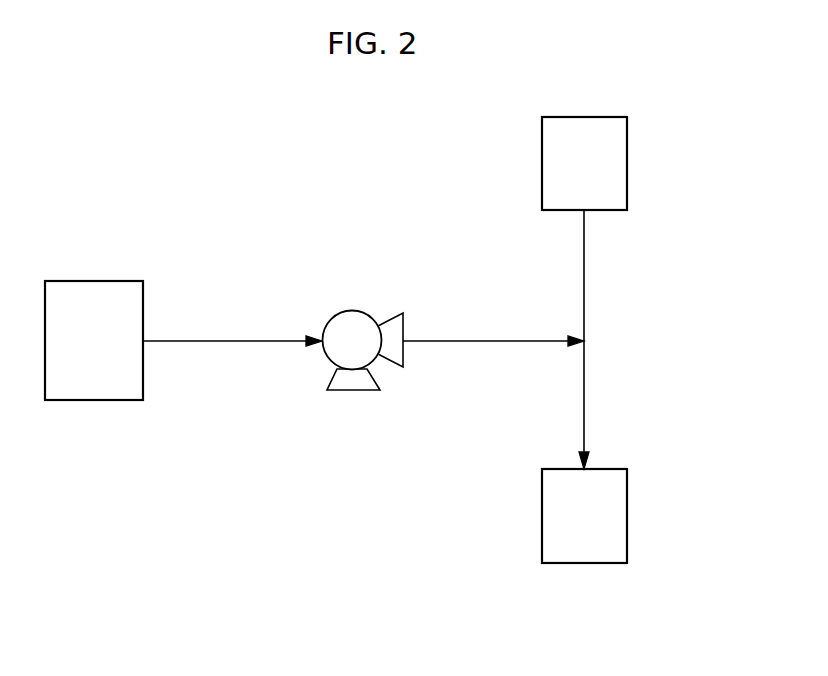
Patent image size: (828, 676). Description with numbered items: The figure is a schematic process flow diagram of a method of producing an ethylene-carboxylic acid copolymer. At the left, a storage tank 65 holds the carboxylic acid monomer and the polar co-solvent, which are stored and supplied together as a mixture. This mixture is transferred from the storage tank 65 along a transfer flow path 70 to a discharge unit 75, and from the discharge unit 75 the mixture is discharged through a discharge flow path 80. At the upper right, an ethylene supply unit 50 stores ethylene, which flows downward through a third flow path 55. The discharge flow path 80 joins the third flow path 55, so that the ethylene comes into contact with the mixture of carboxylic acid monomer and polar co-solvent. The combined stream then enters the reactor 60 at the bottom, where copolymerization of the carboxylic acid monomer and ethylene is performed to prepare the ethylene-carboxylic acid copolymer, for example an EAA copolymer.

The ethylene supply unit 50 is at (628, 165).
The third flow path 55 is at (585, 286).
The reactor 60 is at (628, 516).
The storage tank 65 is at (88, 281).
The transfer flow path 70 is at (227, 341).
The discharge unit 75 is at (353, 310).
The discharge flow path 80 is at (486, 341).